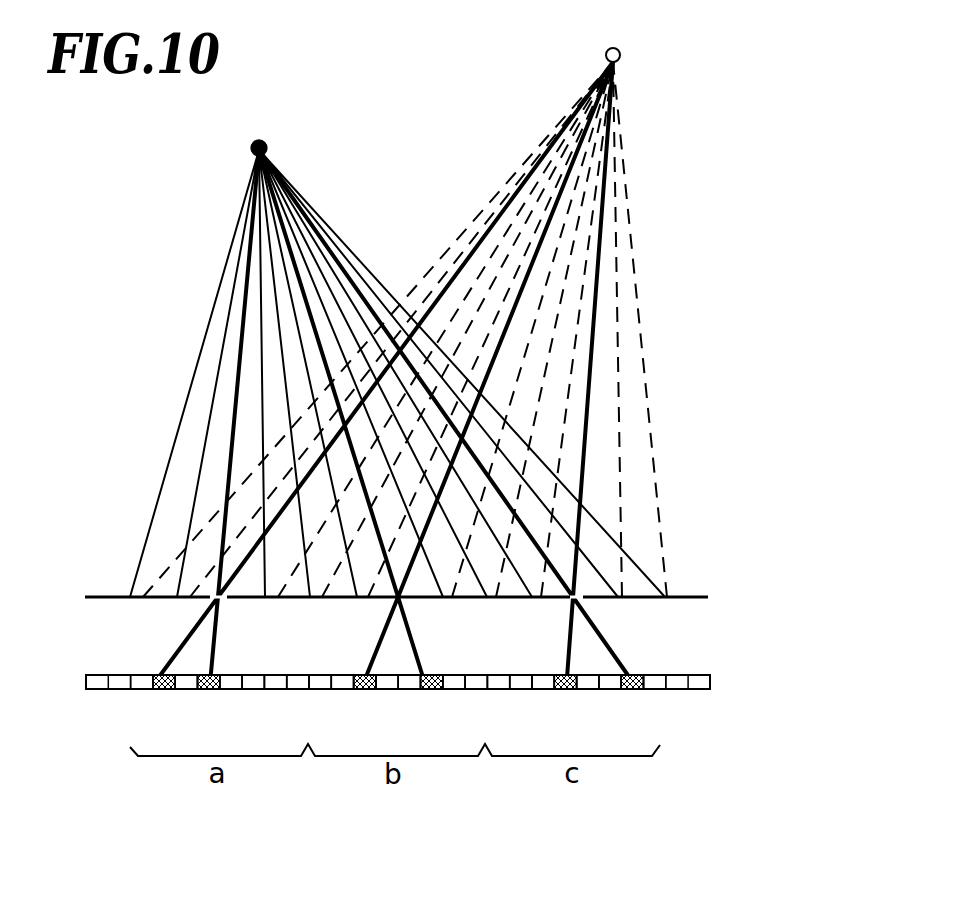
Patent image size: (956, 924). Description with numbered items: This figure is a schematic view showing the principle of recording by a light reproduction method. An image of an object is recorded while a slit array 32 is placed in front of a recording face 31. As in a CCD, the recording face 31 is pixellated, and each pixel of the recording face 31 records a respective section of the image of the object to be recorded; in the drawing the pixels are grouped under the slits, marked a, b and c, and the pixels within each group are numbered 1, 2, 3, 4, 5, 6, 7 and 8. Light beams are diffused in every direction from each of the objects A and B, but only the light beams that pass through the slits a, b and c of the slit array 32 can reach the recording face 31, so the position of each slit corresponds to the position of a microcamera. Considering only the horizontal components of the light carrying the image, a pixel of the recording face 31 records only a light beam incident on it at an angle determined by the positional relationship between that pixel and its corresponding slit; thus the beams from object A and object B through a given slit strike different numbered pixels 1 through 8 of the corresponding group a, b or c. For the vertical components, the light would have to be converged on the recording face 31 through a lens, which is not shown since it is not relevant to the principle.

The recording face 31 is at (710, 681).
The slit array 32 is at (708, 597).
The object A is at (255, 127).
The object B is at (613, 33).
The slit a is at (231, 618).
The slit b is at (414, 617).
The slit c is at (561, 618).
The pixel 1 is at (476, 710).
The pixel 2 is at (453, 710).
The pixel 3 is at (431, 710).
The pixel 4 is at (409, 710).
The pixel 5 is at (387, 710).
The pixel 6 is at (364, 710).
The pixel 7 is at (342, 710).
The pixel 8 is at (319, 710).